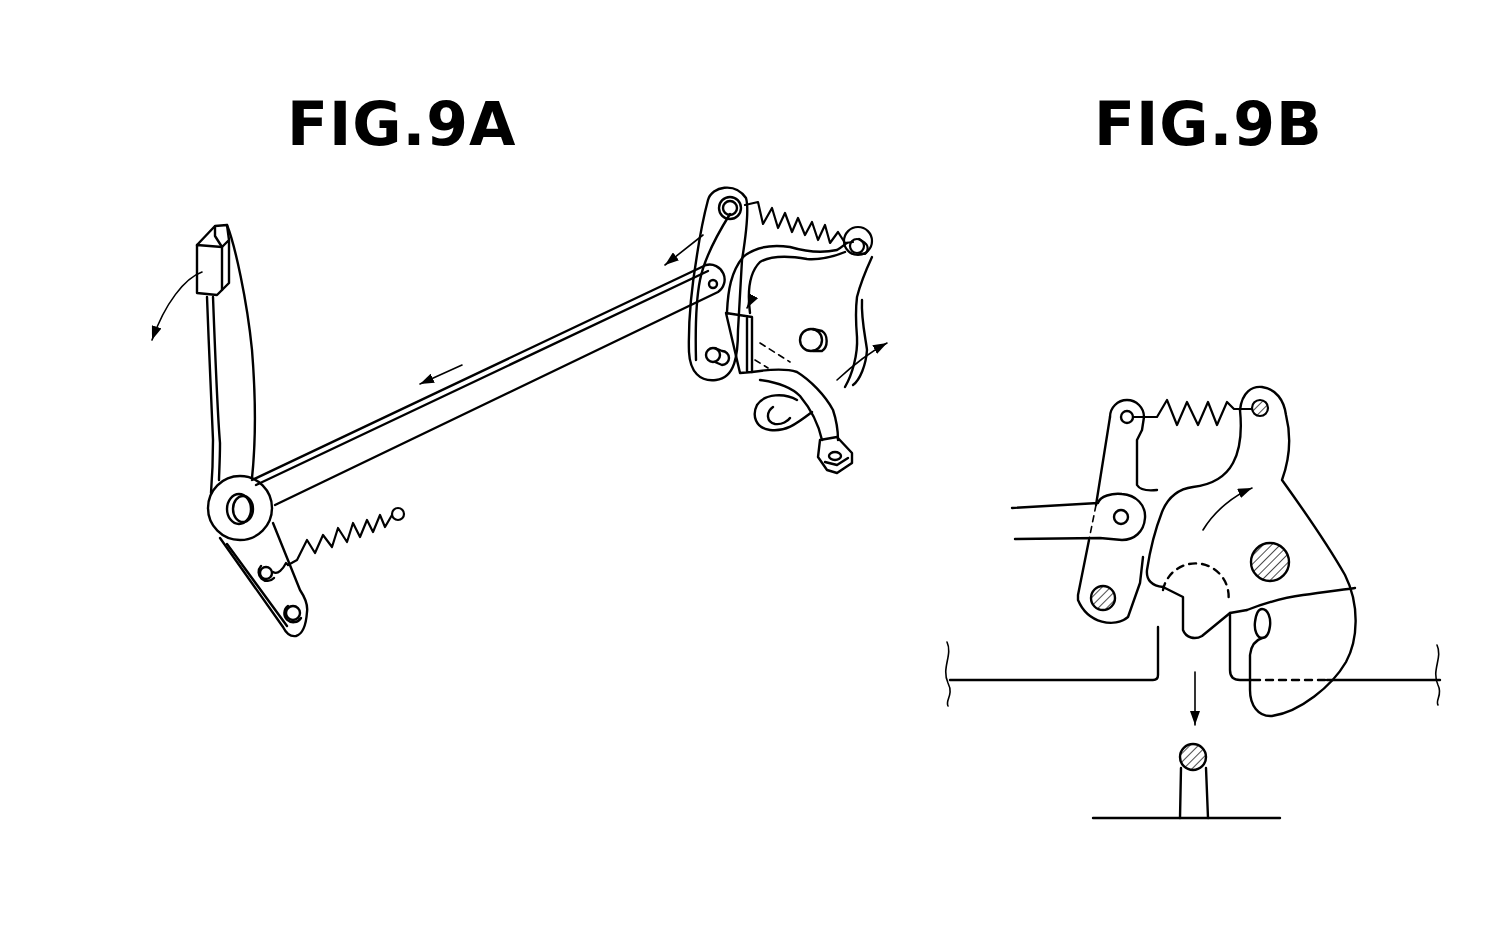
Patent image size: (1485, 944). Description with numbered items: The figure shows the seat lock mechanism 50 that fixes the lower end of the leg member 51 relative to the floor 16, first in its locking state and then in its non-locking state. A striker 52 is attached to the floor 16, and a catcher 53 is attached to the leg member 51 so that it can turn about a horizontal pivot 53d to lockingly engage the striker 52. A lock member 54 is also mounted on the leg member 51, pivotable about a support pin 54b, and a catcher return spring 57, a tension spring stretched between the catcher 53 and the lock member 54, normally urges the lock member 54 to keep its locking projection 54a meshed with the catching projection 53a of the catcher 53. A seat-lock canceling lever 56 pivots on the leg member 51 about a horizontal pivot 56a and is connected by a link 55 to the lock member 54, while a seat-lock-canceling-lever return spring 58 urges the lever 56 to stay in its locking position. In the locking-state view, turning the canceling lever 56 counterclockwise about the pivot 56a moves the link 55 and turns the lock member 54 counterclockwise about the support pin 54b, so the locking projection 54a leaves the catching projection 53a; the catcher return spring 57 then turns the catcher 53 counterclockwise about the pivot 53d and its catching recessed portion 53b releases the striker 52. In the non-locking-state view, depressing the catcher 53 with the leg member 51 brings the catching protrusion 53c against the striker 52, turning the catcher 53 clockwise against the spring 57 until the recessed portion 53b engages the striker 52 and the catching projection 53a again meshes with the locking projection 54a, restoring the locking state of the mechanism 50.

In FIG. 9B, the floor 16 is at (1120, 818).
In FIG. 9A, the seat lock mechanism 50 is at (563, 572).
In FIG. 9B, the seat lock mechanism 50 is at (1368, 266).
In FIG. 9B, the leg member 51 is at (1405, 660).
In FIG. 9A, the striker 52 is at (840, 418).
In FIG. 9B, the striker 52 is at (1206, 748).
In FIG. 9A, the catcher 53 is at (803, 319).
In FIG. 9B, the catcher 53 is at (1231, 565).
In FIG. 9A, the catching projection 53a is at (753, 294).
In FIG. 9B, the catching projection 53a is at (1163, 630).
In FIG. 9A, the catching recessed portion 53b is at (760, 390).
In FIG. 9B, the catching recessed portion 53b is at (1355, 588).
In FIG. 9A, the catching protrusion 53c is at (757, 384).
In FIG. 9B, the catching protrusion 53c is at (1150, 632).
In FIG. 9A, the pivot 53d is at (826, 347).
In FIG. 9B, the pivot 53d is at (1286, 556).
In FIG. 9A, the lock member 54 is at (665, 302).
In FIG. 9B, the lock member 54 is at (1019, 505).
In FIG. 9A, the locking projection 54a is at (736, 320).
In FIG. 9B, the locking projection 54a is at (1157, 490).
In FIG. 9A, the support pin 54b is at (710, 362).
In FIG. 9B, the support pin 54b is at (998, 608).
In FIG. 9A, the link 55 is at (353, 455).
In FIG. 9B, the link 55 is at (1037, 522).
In FIG. 9A, the seat-lock canceling lever 56 is at (238, 317).
In FIG. 9A, the horizontal pivot 56a is at (307, 633).
In FIG. 9A, the catcher return spring 57 is at (793, 218).
In FIG. 9B, the catcher return spring 57 is at (1203, 400).
In FIG. 9A, the seat-lock-canceling-lever return spring 58 is at (362, 537).